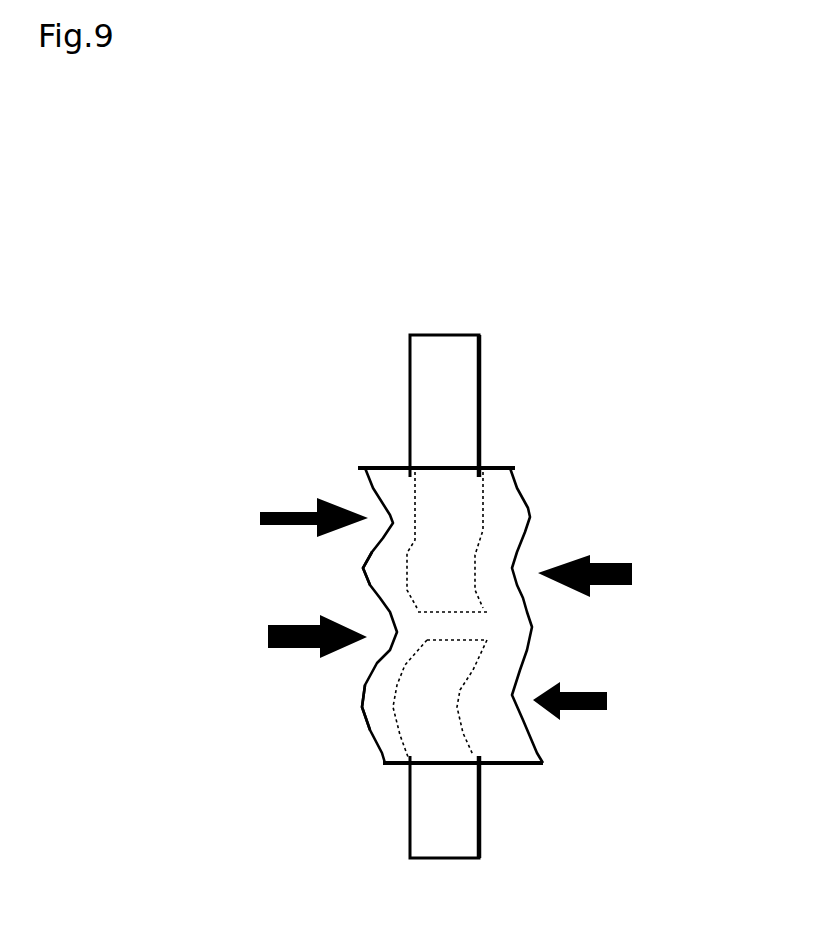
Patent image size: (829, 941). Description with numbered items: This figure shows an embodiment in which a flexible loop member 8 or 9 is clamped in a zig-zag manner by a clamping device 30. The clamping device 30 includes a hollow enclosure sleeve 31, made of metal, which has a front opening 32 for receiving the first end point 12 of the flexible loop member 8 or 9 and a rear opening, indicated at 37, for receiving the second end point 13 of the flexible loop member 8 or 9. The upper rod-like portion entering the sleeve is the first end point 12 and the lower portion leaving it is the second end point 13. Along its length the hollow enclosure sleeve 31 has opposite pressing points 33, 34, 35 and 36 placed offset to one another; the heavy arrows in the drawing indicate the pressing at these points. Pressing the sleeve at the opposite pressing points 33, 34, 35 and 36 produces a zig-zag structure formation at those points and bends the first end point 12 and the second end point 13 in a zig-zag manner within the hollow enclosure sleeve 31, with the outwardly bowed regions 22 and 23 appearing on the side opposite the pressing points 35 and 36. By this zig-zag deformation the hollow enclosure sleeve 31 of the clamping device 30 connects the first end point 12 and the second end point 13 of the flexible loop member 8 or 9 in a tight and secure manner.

The flexible loop member 8 is at (391, 307).
The flexible loop member 9 is at (440, 330).
The clamping device 30 is at (515, 398).
The first end point 12 is at (410, 400).
The second end point 13 is at (410, 817).
The hollow enclosure sleeve 31 is at (502, 525).
The front opening 32 is at (493, 467).
The lower flange 37 is at (517, 770).
The pressing point 33 is at (513, 565).
The pressing point 34 is at (512, 700).
The pressing point 35 is at (392, 522).
The pressing point 36 is at (393, 640).
The upper bulge 22 is at (407, 577).
The lower bulge 23 is at (398, 722).